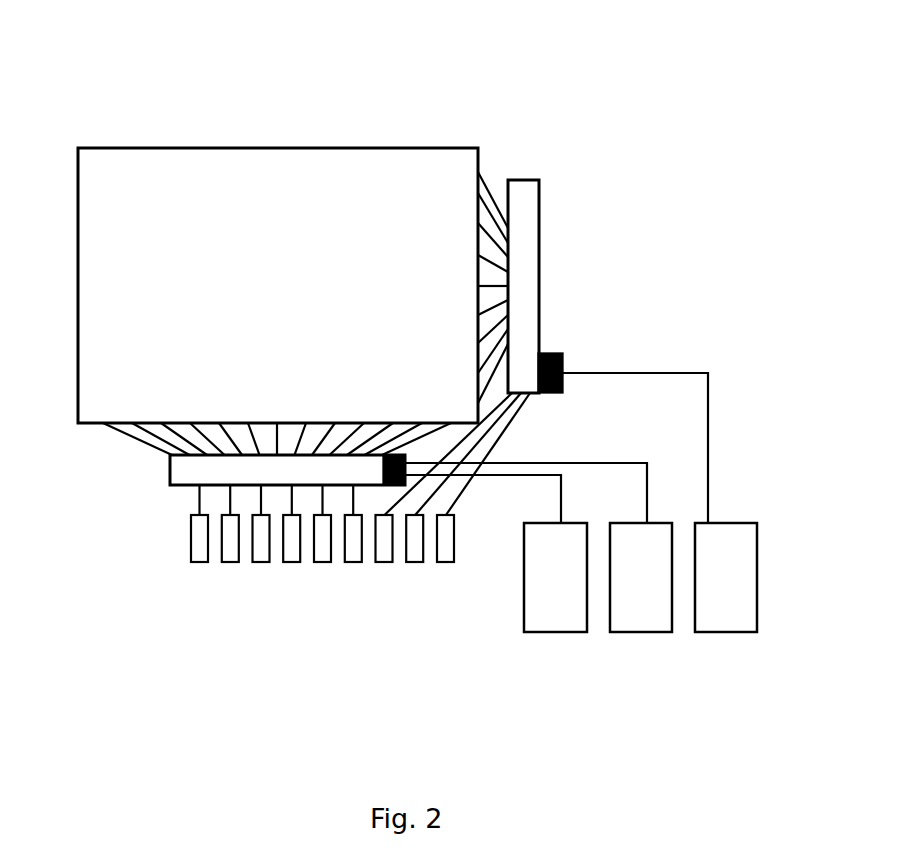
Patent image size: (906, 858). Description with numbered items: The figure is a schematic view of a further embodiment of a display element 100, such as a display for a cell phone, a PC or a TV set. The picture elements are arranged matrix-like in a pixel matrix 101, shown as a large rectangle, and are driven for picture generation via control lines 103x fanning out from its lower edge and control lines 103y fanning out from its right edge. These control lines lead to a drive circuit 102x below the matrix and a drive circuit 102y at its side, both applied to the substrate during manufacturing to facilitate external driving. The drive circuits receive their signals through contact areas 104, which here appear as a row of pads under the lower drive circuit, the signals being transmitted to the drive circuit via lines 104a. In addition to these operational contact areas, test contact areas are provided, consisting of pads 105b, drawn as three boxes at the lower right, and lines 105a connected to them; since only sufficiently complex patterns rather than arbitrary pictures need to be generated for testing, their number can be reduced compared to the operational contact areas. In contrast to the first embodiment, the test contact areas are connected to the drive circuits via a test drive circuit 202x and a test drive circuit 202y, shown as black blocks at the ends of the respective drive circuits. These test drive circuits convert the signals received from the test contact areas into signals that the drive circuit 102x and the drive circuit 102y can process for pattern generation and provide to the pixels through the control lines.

The display element 100 is at (468, 86).
The pixel matrix 101 is at (332, 157).
The drive circuit 102x is at (172, 473).
The drive circuit 102y is at (533, 227).
The control lines 103x is at (100, 430).
The control lines 103y is at (488, 175).
The contact areas 104 is at (283, 563).
The lines 104a is at (197, 500).
The lines 105a is at (557, 462).
The pads 105b is at (570, 615).
The test drive circuit 202x is at (405, 487).
The test drive circuit 202y is at (570, 370).